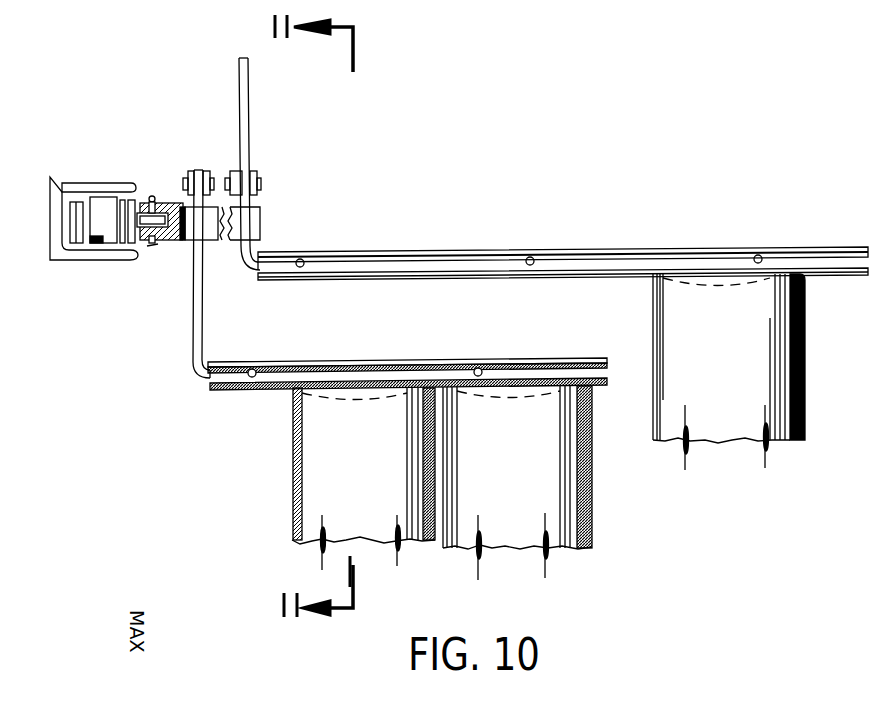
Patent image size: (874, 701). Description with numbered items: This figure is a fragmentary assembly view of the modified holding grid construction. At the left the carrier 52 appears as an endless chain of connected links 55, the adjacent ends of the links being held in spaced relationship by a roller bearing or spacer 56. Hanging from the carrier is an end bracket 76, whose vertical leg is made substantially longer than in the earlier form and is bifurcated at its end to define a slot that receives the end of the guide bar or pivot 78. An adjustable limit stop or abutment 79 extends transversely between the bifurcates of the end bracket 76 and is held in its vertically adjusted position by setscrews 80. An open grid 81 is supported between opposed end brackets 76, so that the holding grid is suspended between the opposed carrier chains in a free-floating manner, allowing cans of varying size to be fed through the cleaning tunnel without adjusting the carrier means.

The carrier 52 is at (90, 248).
The links 55 is at (88, 196).
The roller bearing or spacer 56 is at (104, 196).
The end bracket 76 is at (251, 108).
The guide bar or pivot 78 is at (173, 241).
The adjustable limit stop or abutment 79 is at (188, 171).
The setscrews 80 is at (185, 180).
The open grid 81 is at (394, 251).